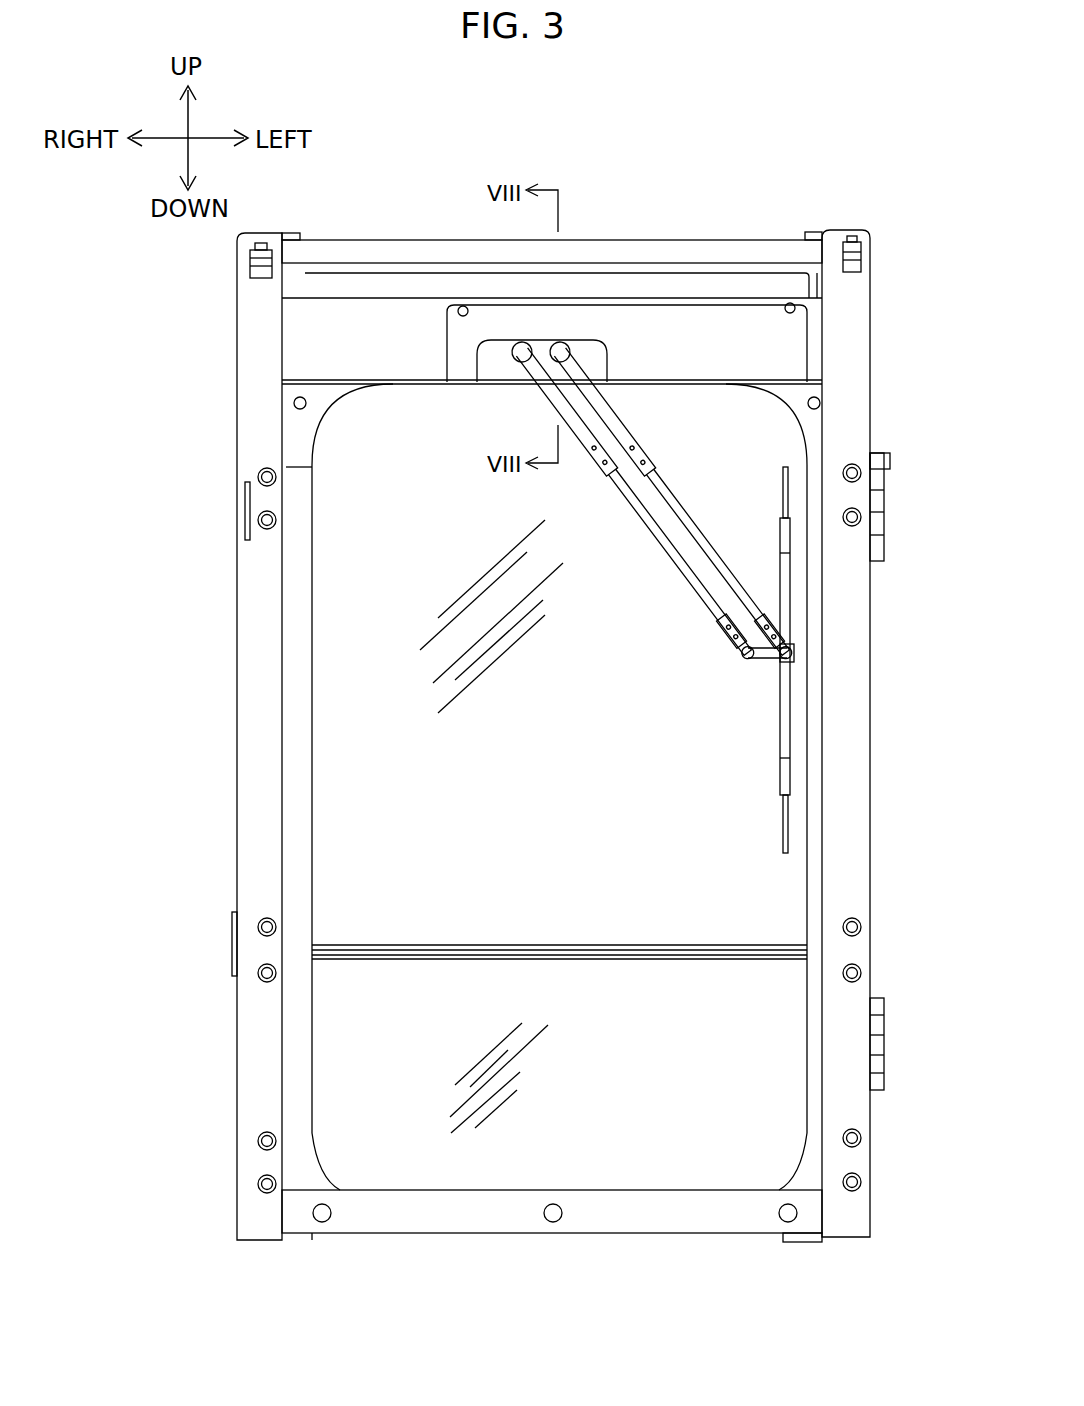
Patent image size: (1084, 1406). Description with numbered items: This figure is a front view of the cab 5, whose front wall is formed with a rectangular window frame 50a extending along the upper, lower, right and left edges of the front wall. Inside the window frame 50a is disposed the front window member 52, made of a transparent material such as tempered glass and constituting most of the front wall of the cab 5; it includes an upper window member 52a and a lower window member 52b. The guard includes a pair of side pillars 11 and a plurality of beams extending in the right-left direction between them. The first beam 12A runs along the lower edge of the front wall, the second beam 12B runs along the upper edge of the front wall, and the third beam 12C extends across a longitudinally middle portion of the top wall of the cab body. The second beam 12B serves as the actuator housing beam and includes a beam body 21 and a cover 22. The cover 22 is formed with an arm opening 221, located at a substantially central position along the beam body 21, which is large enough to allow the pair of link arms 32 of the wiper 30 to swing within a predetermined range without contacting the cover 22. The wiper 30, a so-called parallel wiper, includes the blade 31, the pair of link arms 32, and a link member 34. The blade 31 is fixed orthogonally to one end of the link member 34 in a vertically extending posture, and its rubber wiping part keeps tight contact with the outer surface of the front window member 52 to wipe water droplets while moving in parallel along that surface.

The cab 5 is at (726, 200).
The side pillar 11 is at (262, 720).
The first beam 12A is at (404, 1225).
The second beam 12B is at (298, 336).
The third beam 12C is at (377, 250).
The beam body 21 is at (393, 370).
The cover 22 is at (790, 345).
The arm opening 221 is at (598, 351).
The wiper 30 is at (652, 595).
The blade 31 is at (780, 733).
The link arm 32 is at (713, 557).
The link member 34 is at (773, 655).
The window frame 50a is at (322, 795).
The front window member 52 is at (549, 787).
The upper window member 52a is at (767, 880).
The lower window member 52b is at (342, 1002).